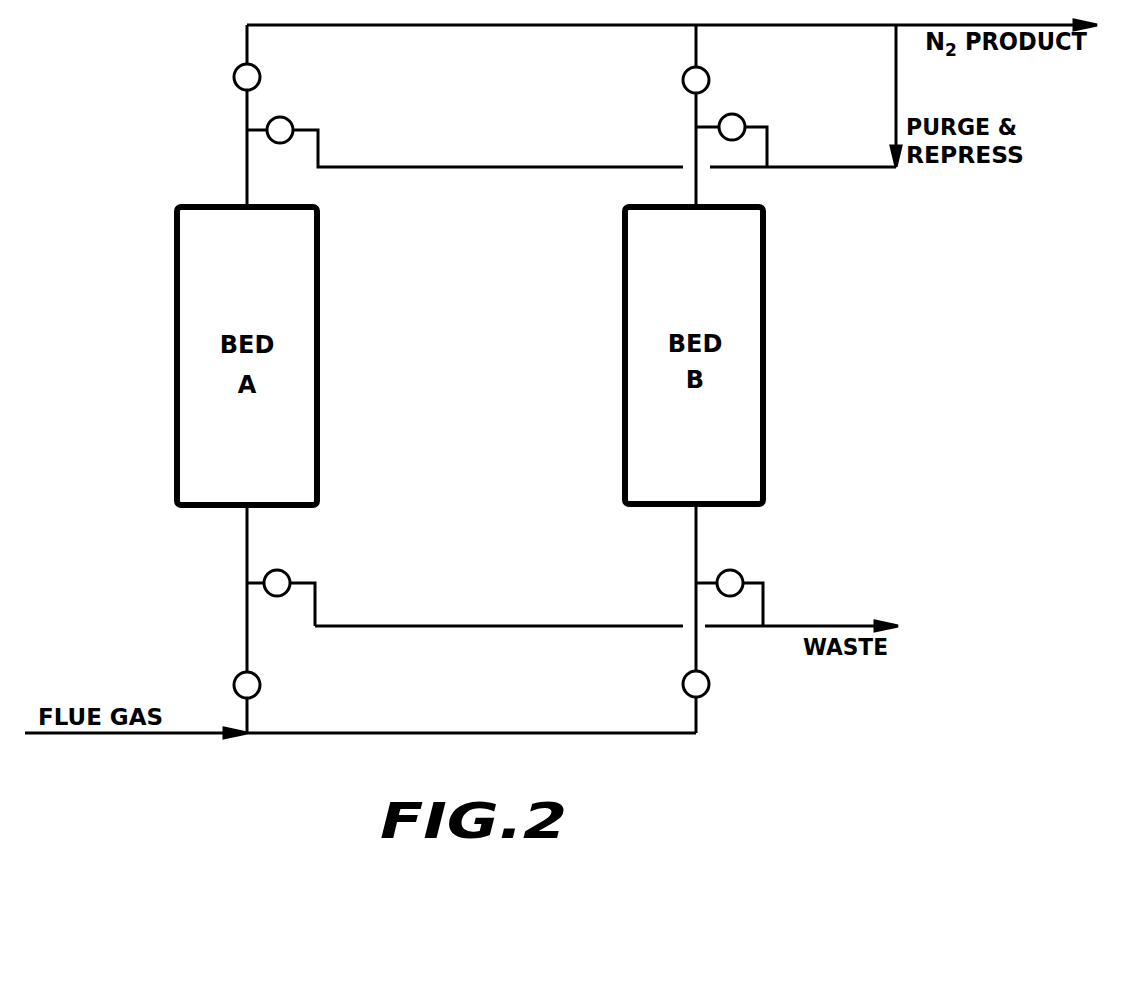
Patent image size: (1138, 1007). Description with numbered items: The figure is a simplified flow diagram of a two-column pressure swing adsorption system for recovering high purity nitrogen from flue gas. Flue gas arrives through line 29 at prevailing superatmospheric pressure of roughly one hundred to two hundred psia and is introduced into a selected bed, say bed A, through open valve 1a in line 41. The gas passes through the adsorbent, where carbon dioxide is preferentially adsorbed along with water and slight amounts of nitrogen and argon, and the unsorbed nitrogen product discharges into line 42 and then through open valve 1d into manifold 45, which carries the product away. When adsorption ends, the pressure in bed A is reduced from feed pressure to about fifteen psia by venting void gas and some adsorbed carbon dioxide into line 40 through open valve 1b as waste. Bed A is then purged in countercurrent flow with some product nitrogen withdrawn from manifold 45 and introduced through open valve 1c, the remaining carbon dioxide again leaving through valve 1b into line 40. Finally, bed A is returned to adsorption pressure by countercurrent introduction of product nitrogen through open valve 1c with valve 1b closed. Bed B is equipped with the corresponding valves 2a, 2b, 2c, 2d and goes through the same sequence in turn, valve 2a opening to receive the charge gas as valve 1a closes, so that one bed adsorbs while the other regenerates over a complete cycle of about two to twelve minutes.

The valve 1a is at (261, 679).
The valve 1b is at (290, 573).
The valve 1c is at (298, 107).
The valve 1d is at (276, 97).
The valve 2a is at (710, 678).
The valve 2b is at (738, 572).
The valve 2c is at (745, 106).
The valve 2d is at (707, 91).
The line 29 is at (184, 738).
The line 40 is at (474, 626).
The line 41 is at (247, 618).
The line 42 is at (243, 171).
The manifold 45 is at (557, 26).